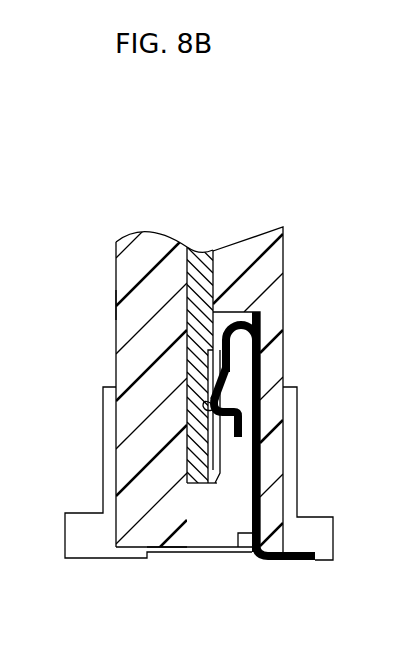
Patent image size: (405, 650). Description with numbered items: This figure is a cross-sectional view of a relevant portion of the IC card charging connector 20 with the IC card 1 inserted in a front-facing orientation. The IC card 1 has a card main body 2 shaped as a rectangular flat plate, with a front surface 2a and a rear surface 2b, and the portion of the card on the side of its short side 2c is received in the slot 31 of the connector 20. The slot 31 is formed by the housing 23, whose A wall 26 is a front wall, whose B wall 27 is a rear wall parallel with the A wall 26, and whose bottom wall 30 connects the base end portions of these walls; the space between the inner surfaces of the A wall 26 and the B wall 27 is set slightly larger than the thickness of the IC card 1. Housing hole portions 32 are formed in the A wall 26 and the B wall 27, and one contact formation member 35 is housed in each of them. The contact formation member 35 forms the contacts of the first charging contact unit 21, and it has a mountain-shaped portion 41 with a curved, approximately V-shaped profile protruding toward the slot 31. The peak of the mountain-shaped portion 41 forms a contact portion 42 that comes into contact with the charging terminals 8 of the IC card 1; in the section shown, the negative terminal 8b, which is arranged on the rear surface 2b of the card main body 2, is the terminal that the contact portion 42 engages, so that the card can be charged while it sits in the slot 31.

The IC card 1 is at (208, 248).
The card main body 2 is at (186, 254).
The front surface 2a is at (167, 262).
The rear surface 2b is at (216, 274).
The short side 2c is at (200, 487).
The charging terminals 8 is at (211, 416).
The negative terminal 8b is at (207, 368).
The IC card charging connector 20 is at (270, 259).
The first charging contact unit 21 is at (257, 375).
The housing 23 is at (258, 283).
The A wall 26 is at (123, 277).
The B wall 27 is at (277, 300).
The bottom wall 30 is at (161, 530).
The slot 31 is at (186, 291).
The housing hole portions 32 is at (243, 515).
The contact formation member 35 is at (262, 465).
The mountain-shaped portion 41 is at (232, 390).
The contact portion 42 is at (241, 436).